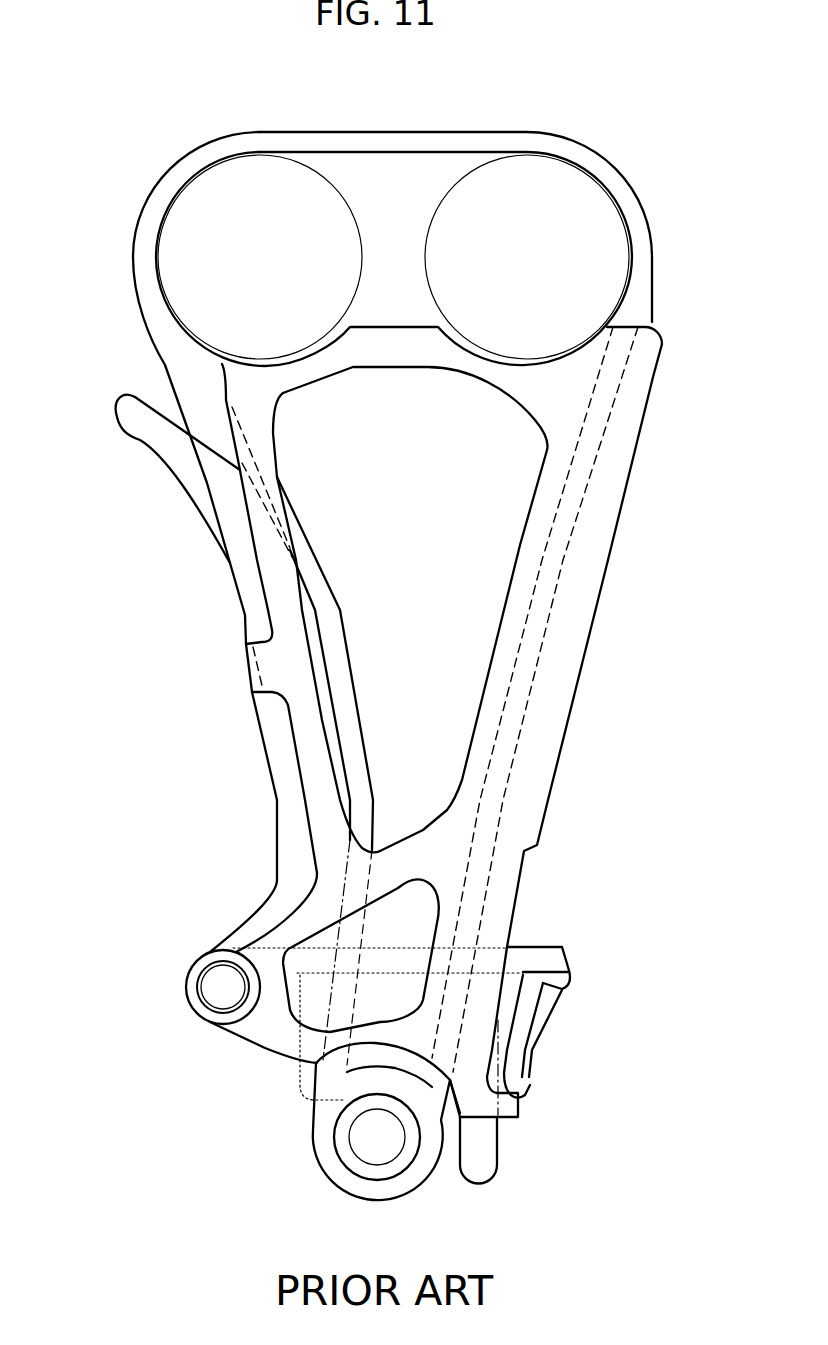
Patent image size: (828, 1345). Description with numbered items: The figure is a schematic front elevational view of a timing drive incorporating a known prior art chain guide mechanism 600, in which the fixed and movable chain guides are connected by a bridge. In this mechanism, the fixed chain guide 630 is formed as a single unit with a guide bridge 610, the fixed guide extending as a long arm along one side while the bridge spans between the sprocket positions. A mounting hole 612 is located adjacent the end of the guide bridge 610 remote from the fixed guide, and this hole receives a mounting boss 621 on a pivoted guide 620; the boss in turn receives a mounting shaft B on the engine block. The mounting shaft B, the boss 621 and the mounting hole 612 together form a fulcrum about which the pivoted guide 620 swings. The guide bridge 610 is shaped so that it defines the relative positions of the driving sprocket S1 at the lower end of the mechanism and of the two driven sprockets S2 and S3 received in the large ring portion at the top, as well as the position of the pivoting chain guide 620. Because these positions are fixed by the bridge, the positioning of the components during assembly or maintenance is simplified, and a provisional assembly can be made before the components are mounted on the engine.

The chain guide mechanism 600 is at (217, 663).
The guide bridge 610 is at (360, 868).
The pivoted guide 620 is at (292, 818).
The mounting boss 621 is at (200, 990).
The mounting hole 612 is at (216, 1000).
The mounting shaft B is at (218, 978).
The fixed chain guide 630 is at (573, 618).
The driving sprocket S1 is at (370, 1137).
The driven sprocket S2 is at (183, 218).
The driven sprocket S3 is at (597, 217).